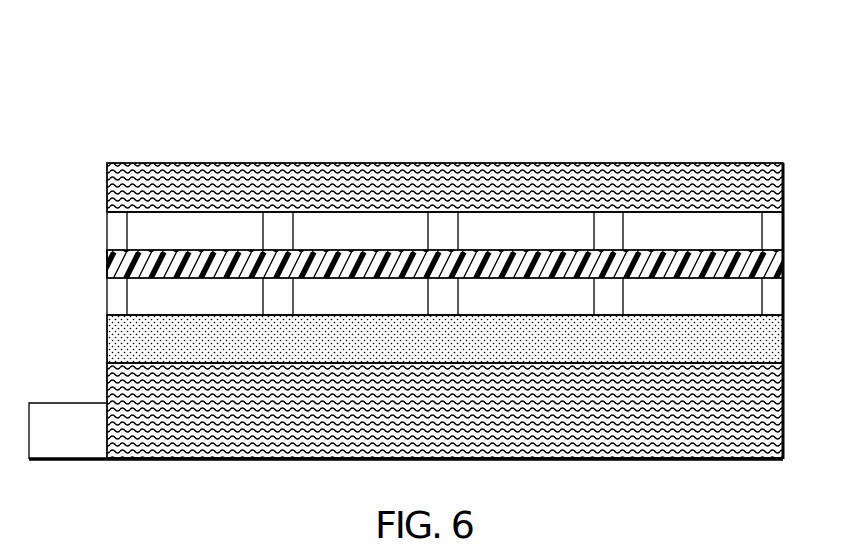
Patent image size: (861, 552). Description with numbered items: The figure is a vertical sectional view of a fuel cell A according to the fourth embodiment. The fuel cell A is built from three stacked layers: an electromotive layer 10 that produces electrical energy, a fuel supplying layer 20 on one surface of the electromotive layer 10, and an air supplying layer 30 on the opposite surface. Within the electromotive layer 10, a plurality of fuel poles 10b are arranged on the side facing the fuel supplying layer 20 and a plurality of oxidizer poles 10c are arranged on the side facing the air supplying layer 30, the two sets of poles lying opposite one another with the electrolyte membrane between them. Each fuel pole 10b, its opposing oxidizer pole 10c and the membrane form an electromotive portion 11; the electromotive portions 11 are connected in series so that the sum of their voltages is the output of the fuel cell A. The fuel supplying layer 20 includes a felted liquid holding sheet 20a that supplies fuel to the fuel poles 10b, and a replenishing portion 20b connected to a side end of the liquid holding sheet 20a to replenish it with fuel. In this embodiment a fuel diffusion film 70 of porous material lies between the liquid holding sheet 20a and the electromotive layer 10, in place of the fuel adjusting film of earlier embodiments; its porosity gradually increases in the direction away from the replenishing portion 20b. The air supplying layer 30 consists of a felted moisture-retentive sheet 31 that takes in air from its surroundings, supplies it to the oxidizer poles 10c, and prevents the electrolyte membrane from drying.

The fuel cell A is at (651, 75).
The air supplying layer 30 is at (470, 155).
The felted moisture-retentive sheet 31 is at (166, 163).
The electromotive layer 10 is at (470, 195).
The fuel poles 10b is at (249, 290).
The oxidizer poles 10c is at (207, 218).
The electromotive portions 11 is at (270, 227).
The fuel supplying layer 20 is at (431, 345).
The fuel diffusion film 70 is at (110, 342).
The felted liquid holding sheet 20a is at (200, 448).
The replenishing portion 20b is at (80, 447).